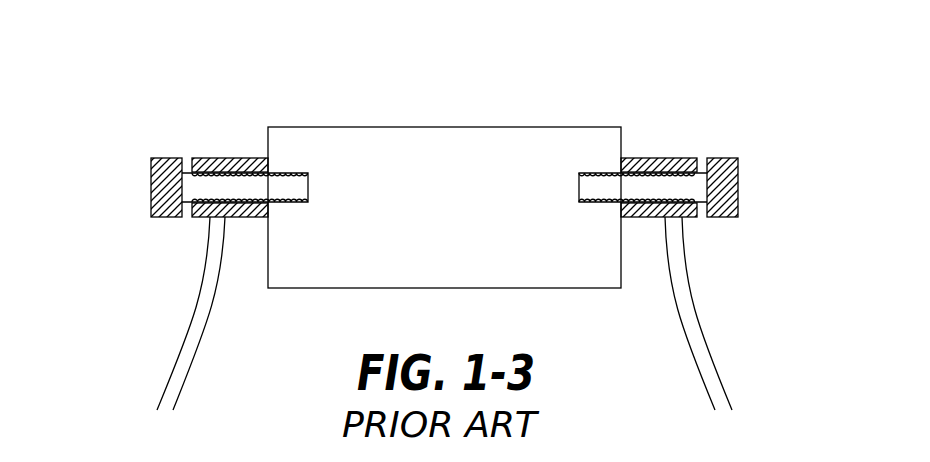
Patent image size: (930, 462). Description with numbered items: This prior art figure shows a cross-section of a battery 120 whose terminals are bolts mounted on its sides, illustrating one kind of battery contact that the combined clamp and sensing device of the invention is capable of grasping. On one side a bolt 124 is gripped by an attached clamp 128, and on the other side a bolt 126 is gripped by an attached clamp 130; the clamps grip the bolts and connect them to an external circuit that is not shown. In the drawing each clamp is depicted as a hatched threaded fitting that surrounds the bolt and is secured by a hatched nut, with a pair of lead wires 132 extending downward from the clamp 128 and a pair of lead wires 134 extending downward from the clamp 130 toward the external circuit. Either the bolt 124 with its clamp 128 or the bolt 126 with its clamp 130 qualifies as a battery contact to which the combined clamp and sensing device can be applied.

The battery 120 is at (417, 85).
The bolt 124 is at (734, 173).
The bolt 126 is at (156, 163).
The clamp 128 is at (653, 160).
The clamp 130 is at (243, 158).
The right lead wires 132 is at (692, 318).
The left lead wires 134 is at (190, 338).